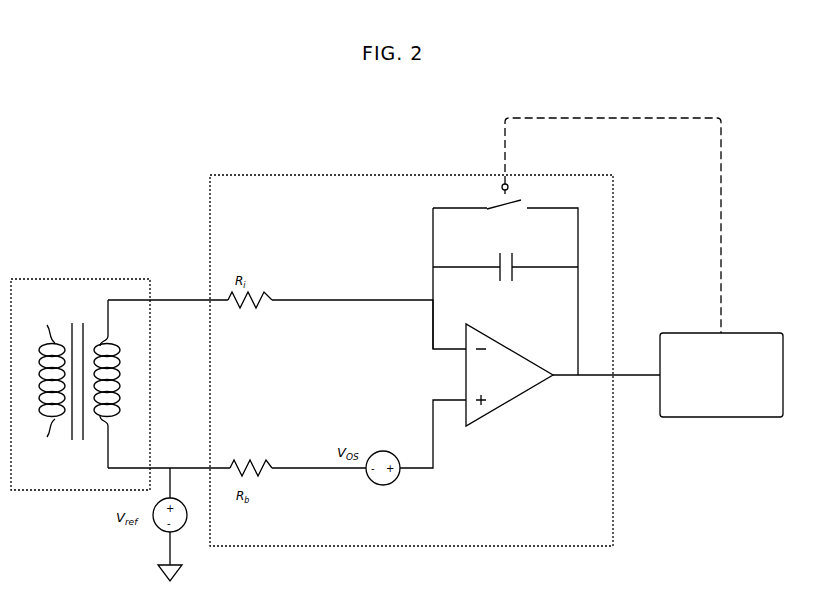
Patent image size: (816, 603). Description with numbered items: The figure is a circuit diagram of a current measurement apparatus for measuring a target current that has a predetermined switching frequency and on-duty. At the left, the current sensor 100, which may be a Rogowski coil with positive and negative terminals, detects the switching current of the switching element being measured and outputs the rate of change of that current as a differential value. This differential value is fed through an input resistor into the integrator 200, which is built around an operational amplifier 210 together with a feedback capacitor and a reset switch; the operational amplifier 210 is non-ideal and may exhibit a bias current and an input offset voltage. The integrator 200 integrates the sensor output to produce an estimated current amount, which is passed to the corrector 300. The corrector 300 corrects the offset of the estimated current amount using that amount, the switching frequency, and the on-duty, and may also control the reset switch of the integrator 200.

The current sensor 100 is at (75, 279).
The integrator 200 is at (315, 175).
The operational (OP) amplifier 210 is at (509, 405).
The corrector 300 is at (723, 417).